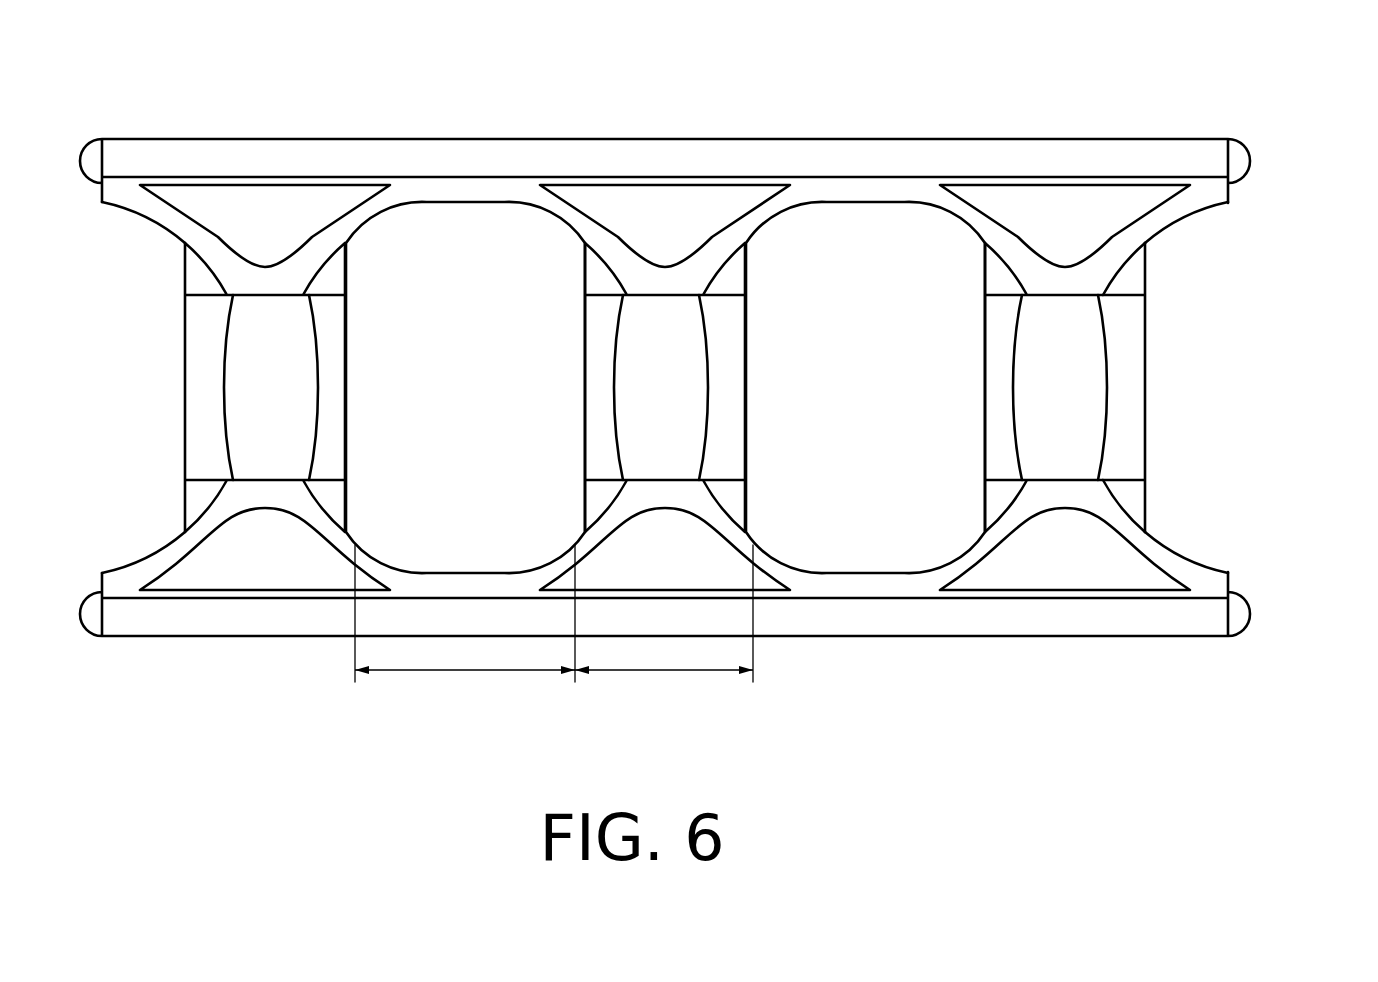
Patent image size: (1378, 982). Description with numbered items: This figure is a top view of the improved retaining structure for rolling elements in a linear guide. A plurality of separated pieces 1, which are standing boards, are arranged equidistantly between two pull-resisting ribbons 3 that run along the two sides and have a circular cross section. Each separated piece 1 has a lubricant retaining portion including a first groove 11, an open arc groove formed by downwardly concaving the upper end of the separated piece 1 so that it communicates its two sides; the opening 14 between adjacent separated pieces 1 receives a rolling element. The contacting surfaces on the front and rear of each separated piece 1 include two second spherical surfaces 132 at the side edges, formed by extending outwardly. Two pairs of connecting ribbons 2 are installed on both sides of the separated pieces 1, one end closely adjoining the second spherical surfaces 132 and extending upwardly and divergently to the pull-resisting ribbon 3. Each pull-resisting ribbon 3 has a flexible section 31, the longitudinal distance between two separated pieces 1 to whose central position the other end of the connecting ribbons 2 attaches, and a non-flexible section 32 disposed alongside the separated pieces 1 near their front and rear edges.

The separated piece 1 is at (718, 327).
The first groove 11 is at (672, 407).
The through hole 14 is at (468, 240).
The second spherical surface 132 is at (1133, 272).
The connecting ribbon 2 is at (750, 223).
The pull-resisting ribbon 3 is at (878, 138).
The flexible section 31 is at (465, 672).
The non-flexible section 32 is at (665, 672).